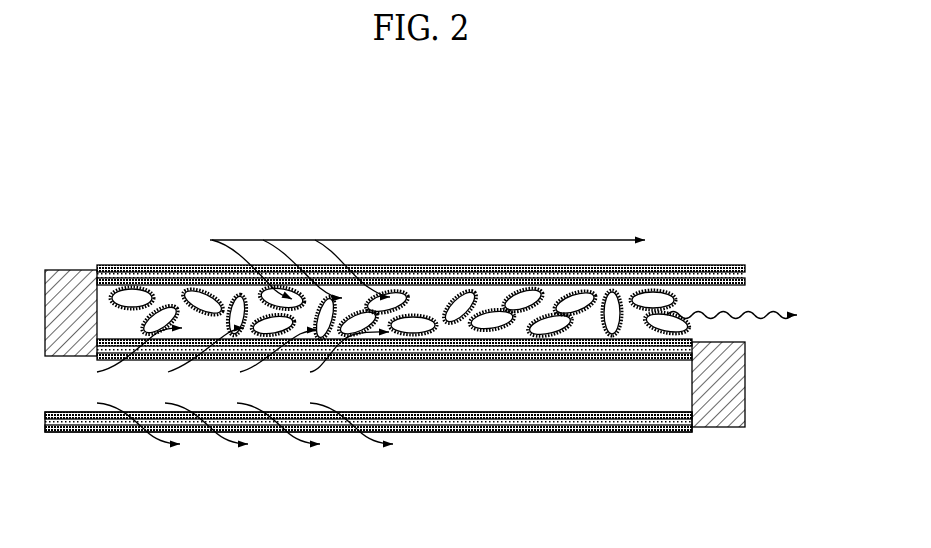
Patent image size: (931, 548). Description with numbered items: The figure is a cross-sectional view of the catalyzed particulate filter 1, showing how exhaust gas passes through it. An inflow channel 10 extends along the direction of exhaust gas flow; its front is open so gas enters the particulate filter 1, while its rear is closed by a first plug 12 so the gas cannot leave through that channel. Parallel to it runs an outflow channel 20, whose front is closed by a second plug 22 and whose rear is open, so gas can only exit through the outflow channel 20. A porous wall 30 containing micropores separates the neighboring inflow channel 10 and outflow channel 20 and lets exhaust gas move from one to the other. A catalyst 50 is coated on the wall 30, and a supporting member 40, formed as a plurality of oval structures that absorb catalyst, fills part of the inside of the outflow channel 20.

The catalyzed particulate filter 1 is at (441, 466).
The inflow channel 10 is at (63, 410).
The first plug 12 is at (722, 414).
The outflow channel 20 is at (733, 297).
The second plug 22 is at (78, 276).
The wall 30 is at (94, 420).
The supporting member 40 is at (545, 330).
The catalyst 50 is at (667, 264).